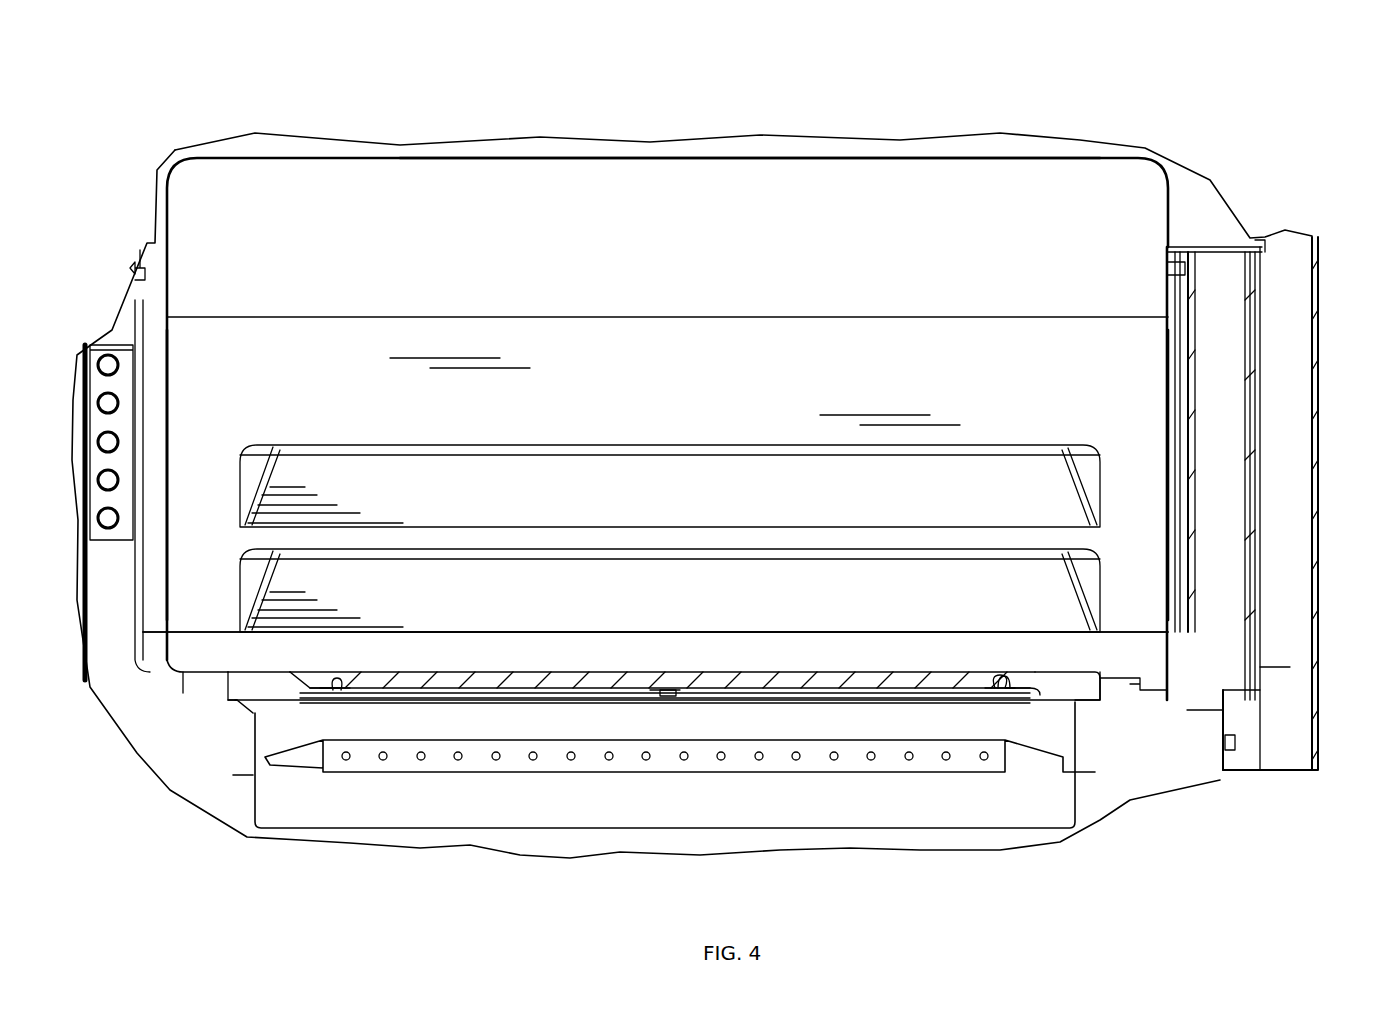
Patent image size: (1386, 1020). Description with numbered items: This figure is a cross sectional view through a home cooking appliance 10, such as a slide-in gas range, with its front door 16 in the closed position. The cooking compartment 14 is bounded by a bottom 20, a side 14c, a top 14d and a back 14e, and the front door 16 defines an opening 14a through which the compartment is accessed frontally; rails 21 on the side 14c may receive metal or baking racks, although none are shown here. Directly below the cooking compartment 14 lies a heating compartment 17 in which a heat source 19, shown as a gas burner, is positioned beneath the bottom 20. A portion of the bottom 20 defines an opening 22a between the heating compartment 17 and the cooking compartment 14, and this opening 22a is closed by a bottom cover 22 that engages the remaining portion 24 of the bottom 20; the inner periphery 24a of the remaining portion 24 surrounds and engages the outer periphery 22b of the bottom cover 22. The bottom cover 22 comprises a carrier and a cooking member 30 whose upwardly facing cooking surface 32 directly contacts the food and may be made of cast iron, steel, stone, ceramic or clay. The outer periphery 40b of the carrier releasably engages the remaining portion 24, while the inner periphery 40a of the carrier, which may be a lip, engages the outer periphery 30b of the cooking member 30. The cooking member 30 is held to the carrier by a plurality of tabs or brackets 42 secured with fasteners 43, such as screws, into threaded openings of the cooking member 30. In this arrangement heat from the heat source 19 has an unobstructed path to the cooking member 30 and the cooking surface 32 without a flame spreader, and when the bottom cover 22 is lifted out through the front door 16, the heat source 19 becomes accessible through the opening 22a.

The cooking appliance 10 is at (150, 106).
The cooking compartment 14 is at (288, 182).
The opening 14a is at (1138, 357).
The side 14c is at (635, 383).
The top 14d is at (717, 158).
The back 14e is at (168, 408).
The front door 16 is at (1325, 357).
The heating compartment 17 is at (302, 800).
The heat source 19 is at (906, 762).
The bottom 20 is at (541, 636).
The rails 21 is at (1000, 585).
The bottom cover 22 is at (268, 667).
The opening 22a is at (226, 662).
The outer periphery of the bottom cover 22b is at (1108, 700).
The remaining portion of the bottom 24 is at (188, 662).
The inner periphery of the remaining portion 24a is at (250, 715).
The cooking member 30 is at (759, 670).
The outer periphery of the cooking member 30b is at (300, 680).
The cooking surface 32 is at (625, 675).
The inner periphery of the carrier 40a is at (1035, 690).
The outer periphery of the carrier 40b is at (1125, 692).
The brackets 42 is at (335, 695).
The fasteners 43 is at (340, 692).